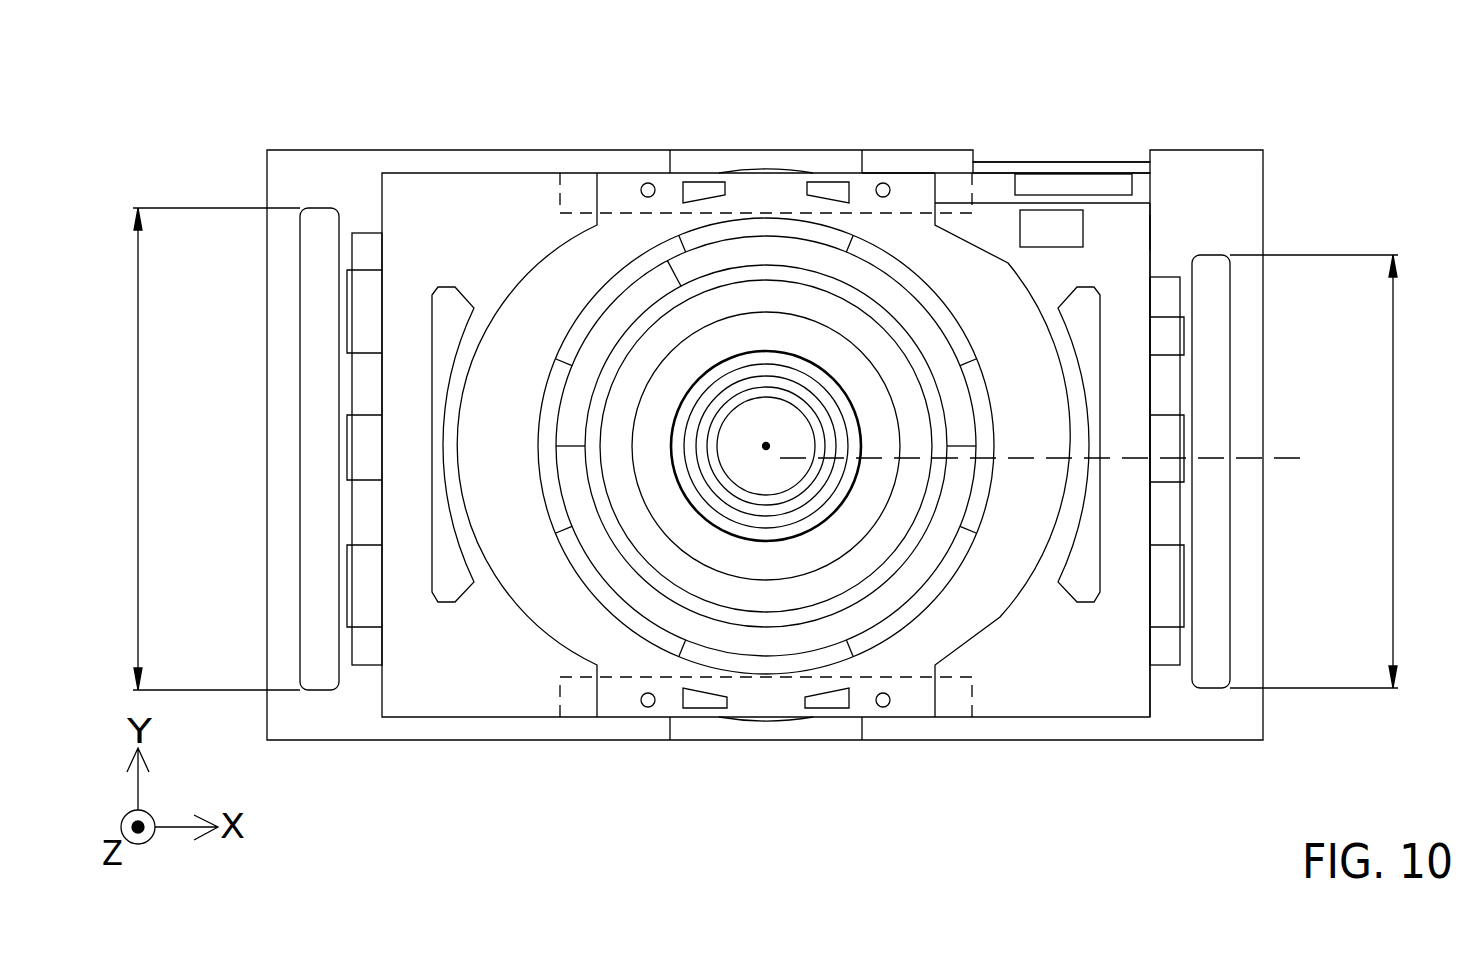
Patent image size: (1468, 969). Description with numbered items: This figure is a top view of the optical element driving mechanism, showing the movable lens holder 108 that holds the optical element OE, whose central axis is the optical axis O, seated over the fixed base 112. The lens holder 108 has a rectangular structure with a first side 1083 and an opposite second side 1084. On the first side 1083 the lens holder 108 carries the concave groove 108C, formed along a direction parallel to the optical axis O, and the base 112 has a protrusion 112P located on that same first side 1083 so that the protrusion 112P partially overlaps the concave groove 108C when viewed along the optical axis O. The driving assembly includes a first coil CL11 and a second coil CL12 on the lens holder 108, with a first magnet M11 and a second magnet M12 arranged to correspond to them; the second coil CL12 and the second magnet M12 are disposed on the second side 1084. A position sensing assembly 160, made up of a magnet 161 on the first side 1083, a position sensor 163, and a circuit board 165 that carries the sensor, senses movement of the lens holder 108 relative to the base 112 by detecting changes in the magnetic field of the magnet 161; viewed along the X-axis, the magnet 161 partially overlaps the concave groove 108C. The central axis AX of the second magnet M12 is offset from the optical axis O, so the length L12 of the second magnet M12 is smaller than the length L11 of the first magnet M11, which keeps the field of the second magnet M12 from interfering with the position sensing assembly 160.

The lens holder 108 is at (467, 672).
The concave groove 108C is at (558, 192).
The first side 1083 is at (884, 170).
The second side 1084 is at (1152, 232).
The base 112 is at (1087, 730).
The protrusion 112P is at (727, 162).
The position sensing assembly 160 is at (1055, 131).
The magnet 161 is at (1057, 230).
The position sensor 163 is at (1083, 187).
The circuit board 165 is at (1018, 168).
The first magnet M11 is at (323, 647).
The second magnet M12 is at (1210, 647).
The first coil CL11 is at (367, 508).
The second coil CL12 is at (1165, 509).
The length of the first magnet L11 is at (191, 449).
The length of the second magnet L12 is at (1341, 471).
The central axis of the second magnet AX is at (1066, 460).
The optical element OE is at (773, 597).
The optical axis O is at (765, 427).